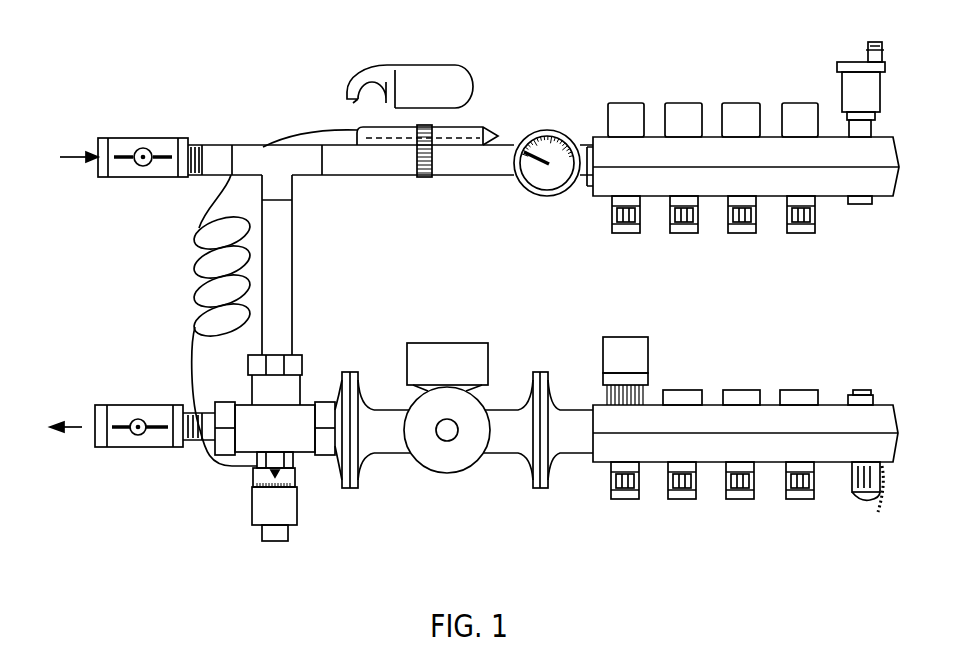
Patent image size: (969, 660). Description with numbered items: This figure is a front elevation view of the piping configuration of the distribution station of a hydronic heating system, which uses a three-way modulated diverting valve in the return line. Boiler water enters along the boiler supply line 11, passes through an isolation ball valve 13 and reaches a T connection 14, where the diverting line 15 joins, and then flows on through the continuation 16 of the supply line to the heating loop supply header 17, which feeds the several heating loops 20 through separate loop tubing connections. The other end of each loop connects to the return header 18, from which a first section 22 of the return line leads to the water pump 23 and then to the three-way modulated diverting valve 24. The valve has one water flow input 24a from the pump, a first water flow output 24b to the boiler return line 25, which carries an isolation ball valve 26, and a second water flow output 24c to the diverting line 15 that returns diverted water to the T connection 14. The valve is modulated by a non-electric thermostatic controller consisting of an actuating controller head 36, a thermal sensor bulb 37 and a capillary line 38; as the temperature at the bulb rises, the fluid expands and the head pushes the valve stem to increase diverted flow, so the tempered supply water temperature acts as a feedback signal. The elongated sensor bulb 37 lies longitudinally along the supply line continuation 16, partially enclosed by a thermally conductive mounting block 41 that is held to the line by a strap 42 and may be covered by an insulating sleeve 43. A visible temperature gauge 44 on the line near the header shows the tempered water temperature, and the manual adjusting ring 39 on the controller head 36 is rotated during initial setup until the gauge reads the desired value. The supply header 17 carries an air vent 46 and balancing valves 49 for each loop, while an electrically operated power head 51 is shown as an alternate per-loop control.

The boiler supply line 11 is at (79, 161).
The isolation ball valve 13 is at (144, 138).
The T connection 14 is at (244, 145).
The diverting line 15 is at (292, 277).
The continuation of supply line 16 is at (506, 145).
The heating loop supply header 17 is at (897, 184).
The return header 18 is at (898, 413).
The heating loops 20 is at (808, 272).
The first section of return line 22 is at (573, 410).
The water pump 23 is at (450, 343).
The three-way modulated diverting valve 24 is at (296, 455).
The water flow input 24a is at (318, 384).
The first water flow output 24b is at (230, 483).
The second water flow output 24c is at (238, 391).
The boiler return line 25 is at (73, 422).
The isolation ball valve 26 is at (133, 405).
The actuating controller head 36 is at (297, 519).
The thermal sensor bulb 37 is at (358, 127).
The capillary line 38 is at (199, 232).
The manual adjusting ring 39 is at (296, 486).
The mounting block 41 is at (368, 139).
The strap 42 is at (418, 162).
The insulating sleeve 43 is at (387, 64).
The temperature gauge 44 is at (547, 197).
The air vent 46 is at (881, 88).
The balancing valves 49 is at (618, 103).
The electrically operated power head 51 is at (649, 346).